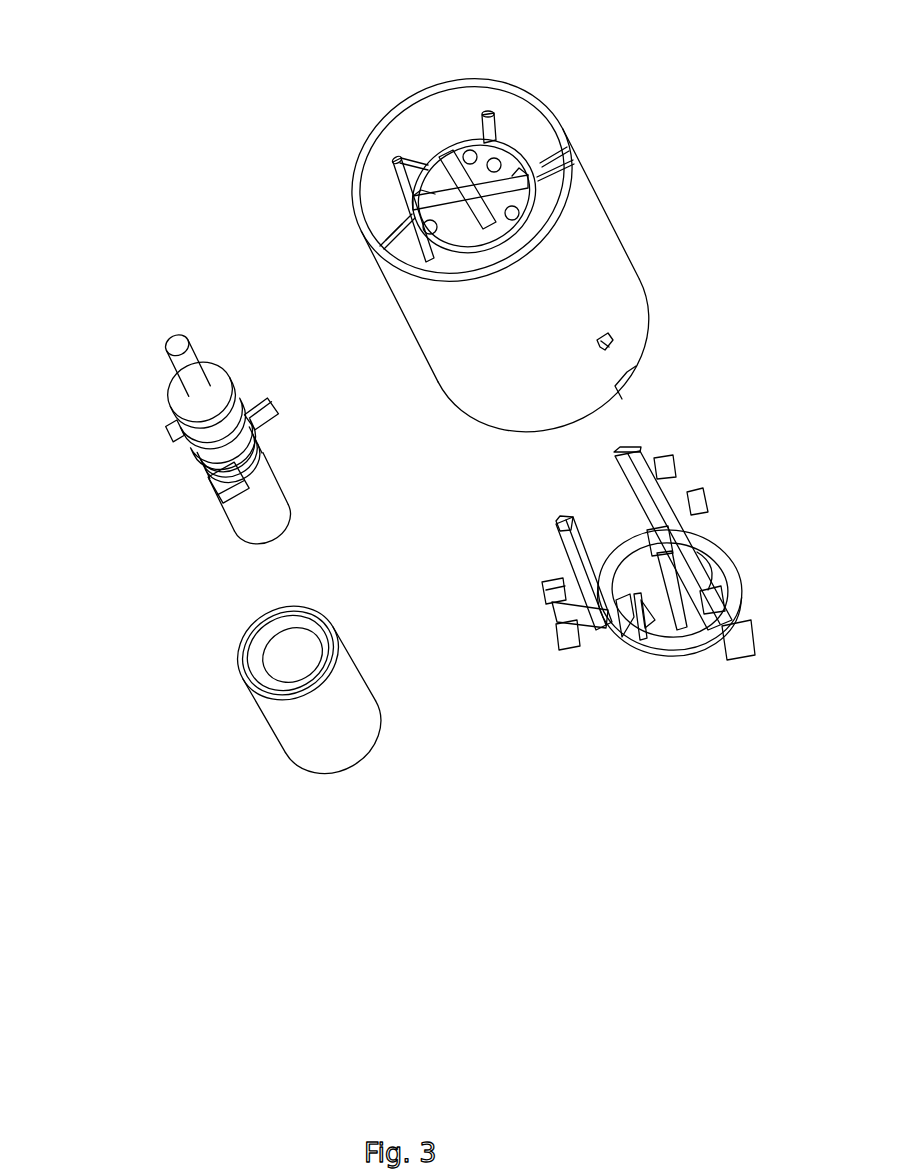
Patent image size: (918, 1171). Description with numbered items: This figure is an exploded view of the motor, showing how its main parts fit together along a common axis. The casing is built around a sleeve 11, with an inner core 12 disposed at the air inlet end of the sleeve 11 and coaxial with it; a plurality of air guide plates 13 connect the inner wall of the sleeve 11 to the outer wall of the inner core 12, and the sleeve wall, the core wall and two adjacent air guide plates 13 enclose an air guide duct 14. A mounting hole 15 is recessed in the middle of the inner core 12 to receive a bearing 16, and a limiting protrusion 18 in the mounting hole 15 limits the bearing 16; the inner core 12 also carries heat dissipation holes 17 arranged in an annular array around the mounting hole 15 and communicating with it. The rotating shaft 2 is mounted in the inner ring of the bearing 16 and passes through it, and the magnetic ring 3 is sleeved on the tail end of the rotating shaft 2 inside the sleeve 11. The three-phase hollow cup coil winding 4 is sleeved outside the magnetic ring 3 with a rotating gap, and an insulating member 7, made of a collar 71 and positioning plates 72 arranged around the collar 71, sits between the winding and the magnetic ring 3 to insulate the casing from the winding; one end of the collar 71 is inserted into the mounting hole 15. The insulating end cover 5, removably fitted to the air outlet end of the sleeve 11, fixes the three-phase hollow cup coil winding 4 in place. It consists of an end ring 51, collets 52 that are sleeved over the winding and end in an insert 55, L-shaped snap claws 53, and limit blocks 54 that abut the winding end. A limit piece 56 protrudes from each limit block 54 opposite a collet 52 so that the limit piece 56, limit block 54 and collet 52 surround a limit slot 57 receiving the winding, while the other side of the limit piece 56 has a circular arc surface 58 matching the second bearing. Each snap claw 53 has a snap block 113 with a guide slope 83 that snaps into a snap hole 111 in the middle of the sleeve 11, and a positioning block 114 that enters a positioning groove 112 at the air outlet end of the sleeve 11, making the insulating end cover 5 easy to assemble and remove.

The rotating shaft 2 is at (182, 348).
The magnetic ring 3 is at (260, 510).
The three-phase hollow cup coil winding 4 is at (288, 725).
The insulating end cover 5 is at (611, 602).
The insulating member 7 is at (172, 508).
The sleeve 11 is at (516, 241).
The inner core 12 is at (417, 183).
The air guide plates 13 is at (487, 112).
The air guide duct 14 is at (428, 133).
The mounting hole 15 is at (507, 147).
The bearing 16 is at (173, 411).
The heat dissipation holes 17 is at (493, 155).
The limiting protrusion 18 is at (487, 187).
The end ring 51 is at (723, 572).
The collet 52 is at (568, 562).
The snap claw 53 is at (570, 613).
The limit block 54 is at (648, 622).
The insert 55 is at (558, 525).
The limit piece 56 is at (640, 612).
The limit slot 57 is at (628, 614).
The circular arc surface 58 is at (663, 628).
The collar 71 is at (223, 468).
The positioning plates 72 is at (228, 485).
The guide slope 83 is at (543, 592).
The snap hole 111 is at (610, 340).
The positioning groove 112 is at (627, 383).
The snap block 113 is at (547, 583).
The positioning block 114 is at (565, 640).